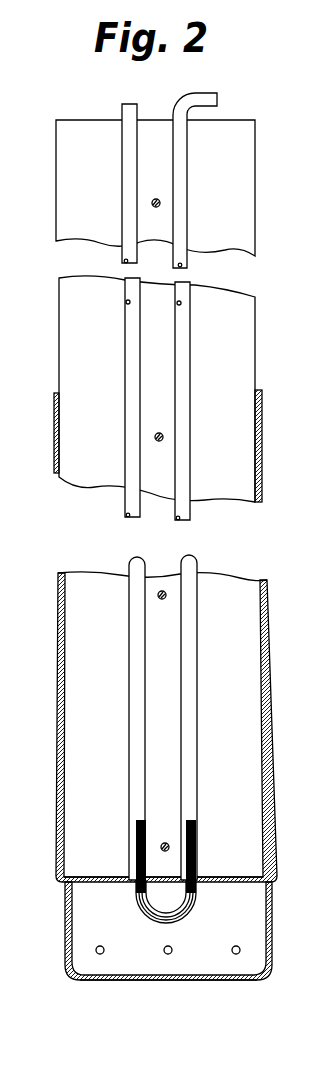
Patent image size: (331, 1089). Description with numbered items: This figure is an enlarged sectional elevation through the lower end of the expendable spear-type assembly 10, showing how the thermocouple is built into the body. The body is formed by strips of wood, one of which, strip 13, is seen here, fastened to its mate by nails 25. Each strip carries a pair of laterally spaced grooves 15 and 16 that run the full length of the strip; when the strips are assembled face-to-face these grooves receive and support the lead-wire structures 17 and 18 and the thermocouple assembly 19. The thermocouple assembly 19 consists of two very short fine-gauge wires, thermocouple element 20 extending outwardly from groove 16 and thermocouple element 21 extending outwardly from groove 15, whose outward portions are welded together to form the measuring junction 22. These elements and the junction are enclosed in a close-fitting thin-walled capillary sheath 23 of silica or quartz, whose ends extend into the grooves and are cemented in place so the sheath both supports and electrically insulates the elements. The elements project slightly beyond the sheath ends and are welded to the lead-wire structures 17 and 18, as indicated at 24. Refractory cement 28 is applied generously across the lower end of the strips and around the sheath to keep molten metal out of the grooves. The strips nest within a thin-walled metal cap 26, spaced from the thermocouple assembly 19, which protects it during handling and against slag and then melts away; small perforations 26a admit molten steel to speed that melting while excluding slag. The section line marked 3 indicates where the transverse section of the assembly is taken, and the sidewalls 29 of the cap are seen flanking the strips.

The section line 3- 3 is at (140, 77).
The assembly 10 is at (43, 438).
The strip of wood 13 is at (242, 199).
The groove 15 is at (186, 298).
The groove 16 is at (125, 297).
The lead-wire structure 17 is at (192, 423).
The lead-wire structure 18 is at (126, 412).
The thermocouple assembly 19 is at (140, 944).
The thermocouple element 20 is at (138, 900).
The thermocouple element 21 is at (197, 893).
The measuring junction 22 is at (168, 917).
The capillary sheath 23 is at (191, 906).
The electrical connections 24 is at (188, 820).
The nails 25 is at (158, 198).
The metal cap 26 is at (270, 948).
The perforations 26a is at (102, 954).
The refractory cement 28 is at (110, 880).
The side wall 29 is at (58, 728).